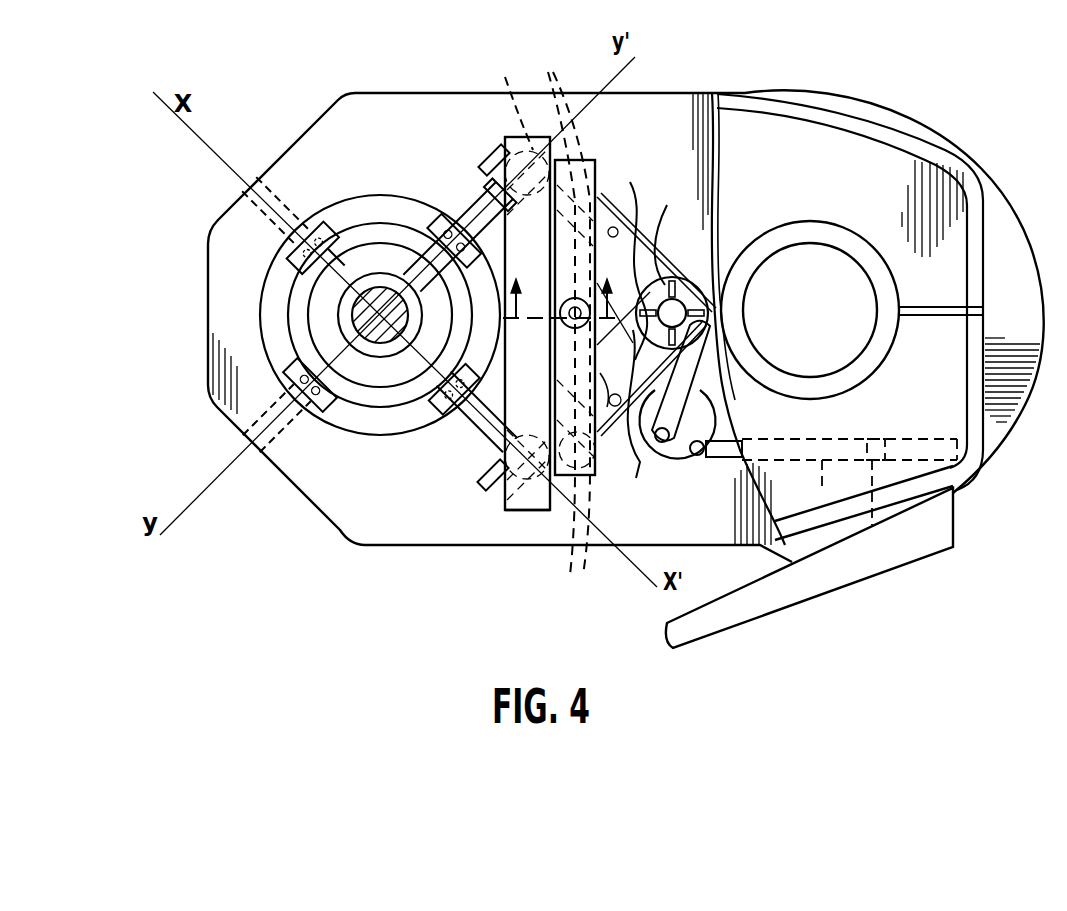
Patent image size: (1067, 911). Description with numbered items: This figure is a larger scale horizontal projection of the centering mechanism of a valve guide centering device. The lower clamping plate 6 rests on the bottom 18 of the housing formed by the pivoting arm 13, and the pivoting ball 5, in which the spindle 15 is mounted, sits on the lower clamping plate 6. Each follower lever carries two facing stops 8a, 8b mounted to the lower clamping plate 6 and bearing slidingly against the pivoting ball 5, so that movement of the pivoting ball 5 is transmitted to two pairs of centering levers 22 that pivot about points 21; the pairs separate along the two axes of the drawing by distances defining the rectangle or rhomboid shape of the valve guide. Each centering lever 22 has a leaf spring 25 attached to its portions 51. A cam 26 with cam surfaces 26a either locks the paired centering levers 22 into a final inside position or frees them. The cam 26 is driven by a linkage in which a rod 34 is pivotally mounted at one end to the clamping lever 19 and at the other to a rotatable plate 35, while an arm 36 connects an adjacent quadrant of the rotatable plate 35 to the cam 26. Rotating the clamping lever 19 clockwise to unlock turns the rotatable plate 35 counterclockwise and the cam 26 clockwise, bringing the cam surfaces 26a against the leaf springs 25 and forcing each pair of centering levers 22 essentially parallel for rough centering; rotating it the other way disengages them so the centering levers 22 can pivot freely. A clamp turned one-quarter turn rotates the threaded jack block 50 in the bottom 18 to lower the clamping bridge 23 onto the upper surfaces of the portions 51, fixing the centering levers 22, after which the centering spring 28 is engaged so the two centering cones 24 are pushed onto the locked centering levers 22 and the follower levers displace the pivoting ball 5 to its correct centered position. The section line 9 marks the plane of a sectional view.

The pivoting ball 5 is at (318, 322).
The lower clamping plate 6 is at (335, 415).
The stop 8a is at (312, 267).
The stop 8b is at (480, 205).
The section line 9- 9 is at (562, 286).
The pivoting arm 13 is at (957, 237).
The spindle 15 is at (378, 288).
The bottom 18 is at (298, 160).
The clamping lever 19 is at (937, 530).
The points 21 is at (612, 385).
The centering levers 22 is at (505, 160).
The clamping bridge 23 is at (593, 480).
The centering cones 24 is at (527, 435).
The leaf spring 25 is at (656, 328).
The cam 26 is at (690, 293).
The cam surfaces 26a is at (668, 232).
The centering spring 28 is at (537, 517).
The rod 34 is at (822, 480).
The rotatable plate 35 is at (671, 455).
The arm 36 is at (717, 373).
The jack block 50 is at (560, 305).
The portions 51 is at (562, 326).